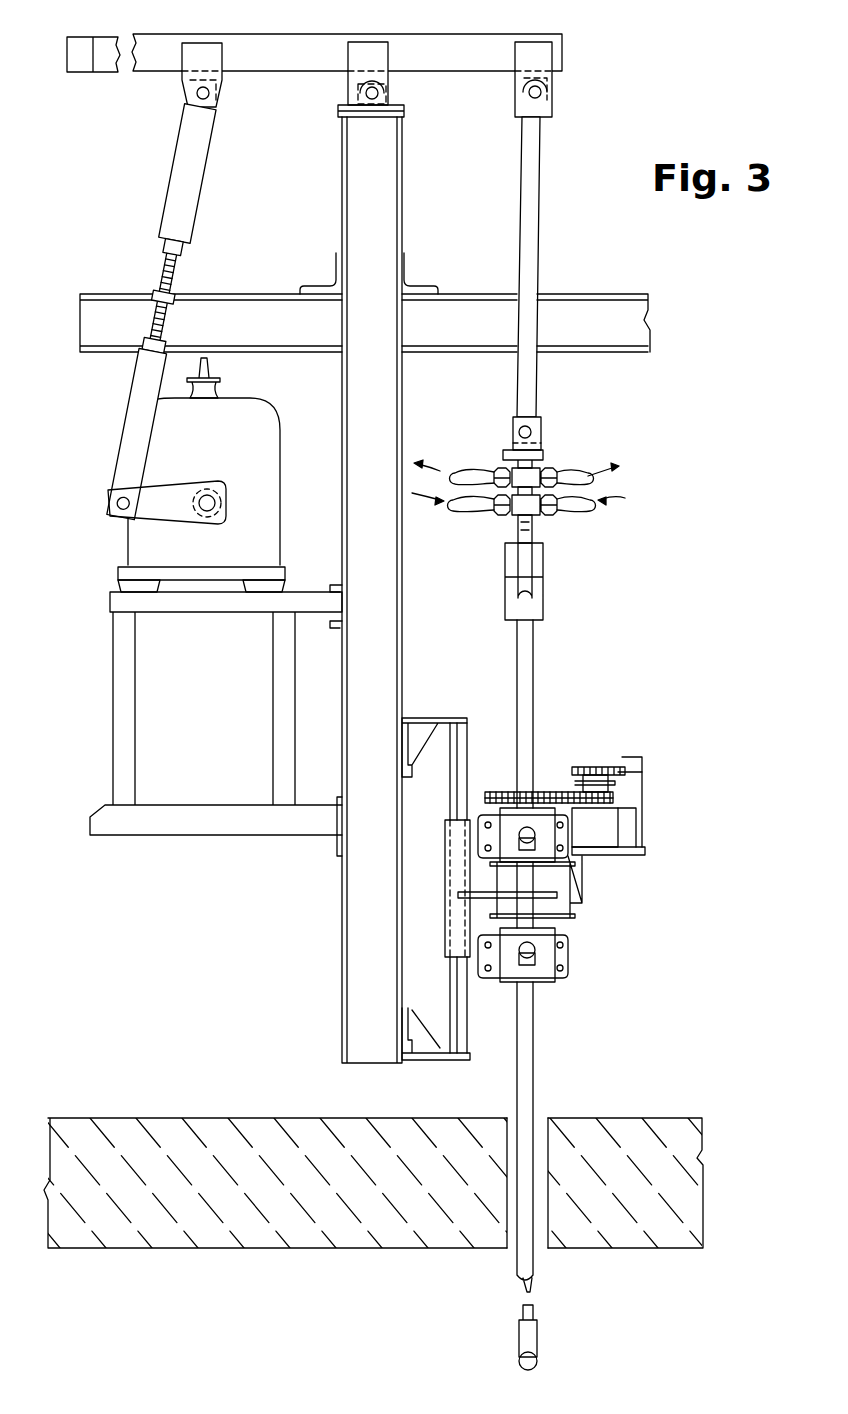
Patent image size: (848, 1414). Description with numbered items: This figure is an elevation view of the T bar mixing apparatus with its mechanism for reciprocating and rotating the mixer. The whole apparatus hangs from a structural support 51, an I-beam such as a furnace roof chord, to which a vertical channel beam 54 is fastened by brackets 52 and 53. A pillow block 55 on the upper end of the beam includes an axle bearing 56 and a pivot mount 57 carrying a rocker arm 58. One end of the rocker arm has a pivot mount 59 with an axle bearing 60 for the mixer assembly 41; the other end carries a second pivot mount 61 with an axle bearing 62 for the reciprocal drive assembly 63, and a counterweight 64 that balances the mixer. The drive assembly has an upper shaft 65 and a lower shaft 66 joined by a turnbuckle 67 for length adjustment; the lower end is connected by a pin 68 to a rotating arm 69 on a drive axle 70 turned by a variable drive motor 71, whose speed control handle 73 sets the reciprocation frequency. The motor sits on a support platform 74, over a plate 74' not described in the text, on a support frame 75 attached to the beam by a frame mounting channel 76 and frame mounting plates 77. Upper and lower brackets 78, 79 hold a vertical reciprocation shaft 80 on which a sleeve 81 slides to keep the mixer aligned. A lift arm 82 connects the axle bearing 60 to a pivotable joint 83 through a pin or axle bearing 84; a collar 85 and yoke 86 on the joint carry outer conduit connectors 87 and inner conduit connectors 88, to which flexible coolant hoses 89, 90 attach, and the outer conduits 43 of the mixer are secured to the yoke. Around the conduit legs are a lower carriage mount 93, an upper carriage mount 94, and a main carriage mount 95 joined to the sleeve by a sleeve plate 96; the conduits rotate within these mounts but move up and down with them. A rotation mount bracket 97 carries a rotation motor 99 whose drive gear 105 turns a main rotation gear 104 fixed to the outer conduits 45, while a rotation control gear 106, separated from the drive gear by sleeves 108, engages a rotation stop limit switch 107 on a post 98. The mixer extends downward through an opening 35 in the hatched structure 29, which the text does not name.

The ground 29 is at (703, 1158).
The bore hole 35 is at (545, 1120).
The mixer assembly 41 is at (612, 715).
The outer conduits 43 is at (540, 1340).
The outer conduits 45 is at (540, 1284).
The structural support 51 is at (622, 294).
The bracket 52 is at (409, 276).
The bracket 53 is at (336, 276).
The vertical channel beam 54 is at (402, 200).
The pillow block 55 is at (394, 98).
The axle bearing 56 is at (366, 93).
The pivot mount 57 is at (392, 50).
The rocker arm 58 is at (250, 34).
The pivot mount 59 is at (556, 74).
The axle bearing 60 is at (552, 100).
The second pivot mount 61 is at (222, 78).
The axle bearing 62 is at (196, 93).
The reciprocal drive assembly 63 is at (127, 250).
The counterweight 64 is at (78, 36).
The upper shaft 65 is at (206, 170).
The lower shaft 66 is at (128, 392).
The turnbuckle 67 is at (178, 268).
The pin 68 is at (114, 504).
The rotating arm 69 is at (150, 515).
The drive axle 70 is at (208, 490).
The variable drive motor 71 is at (282, 446).
The speed control handle 73 is at (220, 388).
The support platform 74 is at (222, 566).
The base plate 74' is at (166, 583).
The support frame 75 is at (108, 648).
The frame mounting channel 76 is at (336, 630).
The frame mounting plates 77 is at (340, 850).
The upper bracket 78 is at (412, 730).
The lower bracket 79 is at (420, 1050).
The vertical reciprocation shaft 80 is at (460, 778).
The sleeve 81 is at (445, 925).
The lift arm 82 is at (540, 200).
The pivotable joint 83 is at (537, 448).
The pin or axle bearing 84 is at (541, 425).
The collar 85 is at (534, 528).
The yoke 86 is at (545, 580).
The outer conduit connectors 87 is at (550, 508).
The inner conduit connectors 88 is at (548, 468).
The hose 89 is at (588, 500).
The hose 90 is at (580, 471).
The lower carriage mount 93 is at (570, 960).
The upper carriage mount 94 is at (568, 852).
The main carriage mount 95 is at (580, 905).
The sleeve plate 96 is at (478, 903).
The rotation mount bracket 97 is at (625, 851).
The rotation stop limit switch post 98 is at (642, 830).
The rotation motor 99 is at (618, 820).
The main rotation gear 104 is at (556, 790).
The rotation drive gear 105 is at (613, 797).
The rotation control gear 106 is at (592, 765).
The rotation stop limit switch 107 is at (610, 764).
The sleeves 108 is at (612, 778).